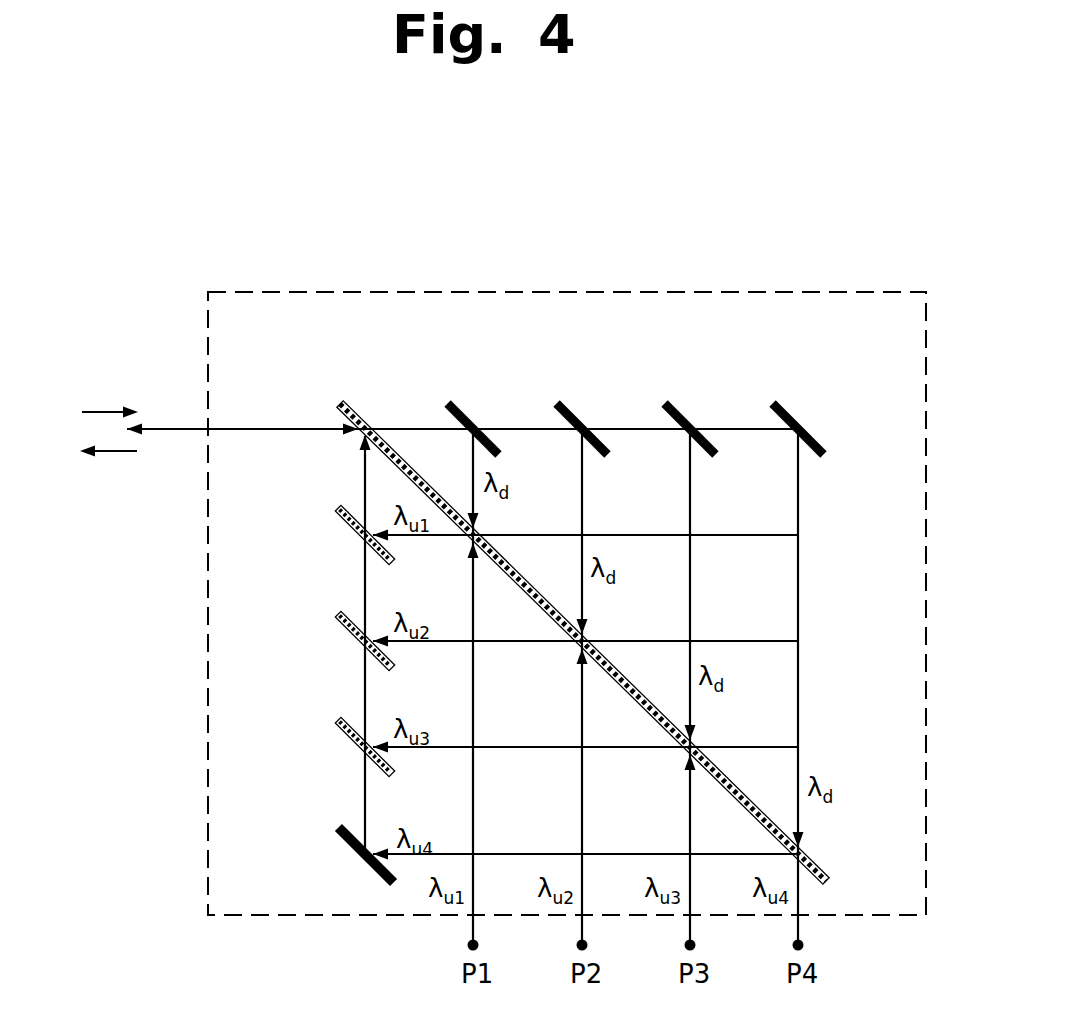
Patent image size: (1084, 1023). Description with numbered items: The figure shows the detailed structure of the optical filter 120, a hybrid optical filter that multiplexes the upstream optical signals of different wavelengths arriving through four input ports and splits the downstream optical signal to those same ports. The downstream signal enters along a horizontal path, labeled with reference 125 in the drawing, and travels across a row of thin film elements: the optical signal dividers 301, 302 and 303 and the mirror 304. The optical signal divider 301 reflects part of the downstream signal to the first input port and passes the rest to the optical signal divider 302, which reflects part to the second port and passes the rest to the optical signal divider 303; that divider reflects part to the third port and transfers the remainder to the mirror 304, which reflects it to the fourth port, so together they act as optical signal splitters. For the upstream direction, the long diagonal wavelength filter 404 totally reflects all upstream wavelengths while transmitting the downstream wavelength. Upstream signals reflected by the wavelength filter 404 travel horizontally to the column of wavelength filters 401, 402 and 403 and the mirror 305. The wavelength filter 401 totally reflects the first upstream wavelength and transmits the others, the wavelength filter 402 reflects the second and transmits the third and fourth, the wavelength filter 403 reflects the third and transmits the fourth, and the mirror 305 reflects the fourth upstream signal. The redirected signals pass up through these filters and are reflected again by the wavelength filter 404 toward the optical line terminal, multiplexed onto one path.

The optical filter 120 is at (856, 218).
The feeder optical fiber 125 is at (184, 428).
The optical signal divider 301 is at (468, 410).
The optical signal divider 302 is at (577, 410).
The optical signal divider 303 is at (685, 410).
The mirror 304 is at (793, 410).
The mirror 305 is at (356, 846).
The wavelength filter 401 is at (356, 528).
The wavelength filter 402 is at (356, 634).
The wavelength filter 403 is at (356, 740).
The wavelength filter 404 is at (818, 866).